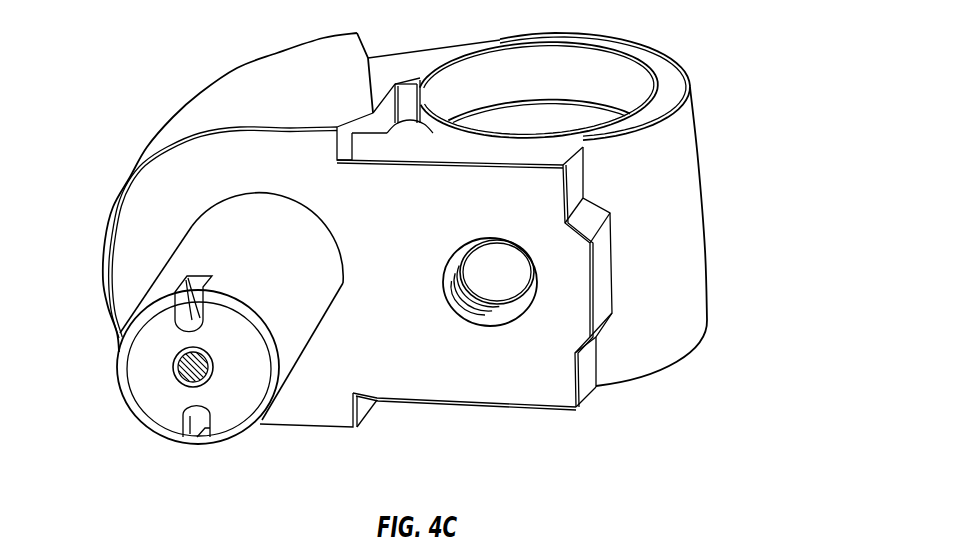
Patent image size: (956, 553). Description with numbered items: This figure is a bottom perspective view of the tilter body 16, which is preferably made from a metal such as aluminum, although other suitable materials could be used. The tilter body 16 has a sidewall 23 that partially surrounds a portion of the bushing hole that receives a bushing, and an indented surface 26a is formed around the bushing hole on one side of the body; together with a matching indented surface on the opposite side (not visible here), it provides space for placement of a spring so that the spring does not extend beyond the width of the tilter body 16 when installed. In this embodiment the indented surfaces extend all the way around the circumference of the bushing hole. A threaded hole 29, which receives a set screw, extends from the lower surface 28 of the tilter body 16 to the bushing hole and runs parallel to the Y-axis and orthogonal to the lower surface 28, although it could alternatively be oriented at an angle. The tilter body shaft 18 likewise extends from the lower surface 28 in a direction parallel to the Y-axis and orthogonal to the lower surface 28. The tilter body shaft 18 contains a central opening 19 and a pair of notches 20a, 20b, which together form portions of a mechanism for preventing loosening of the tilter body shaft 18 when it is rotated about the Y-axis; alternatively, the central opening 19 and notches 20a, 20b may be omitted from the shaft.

The tilter body 16 is at (267, 110).
The tilter body shaft 18 is at (292, 297).
The central opening 19 is at (213, 370).
The notch 20a is at (193, 317).
The notch 20b is at (187, 440).
The sidewall 23 is at (667, 90).
The indented surface 26a is at (540, 103).
The lower surface 28 is at (405, 230).
The threaded hole 29 is at (497, 300).